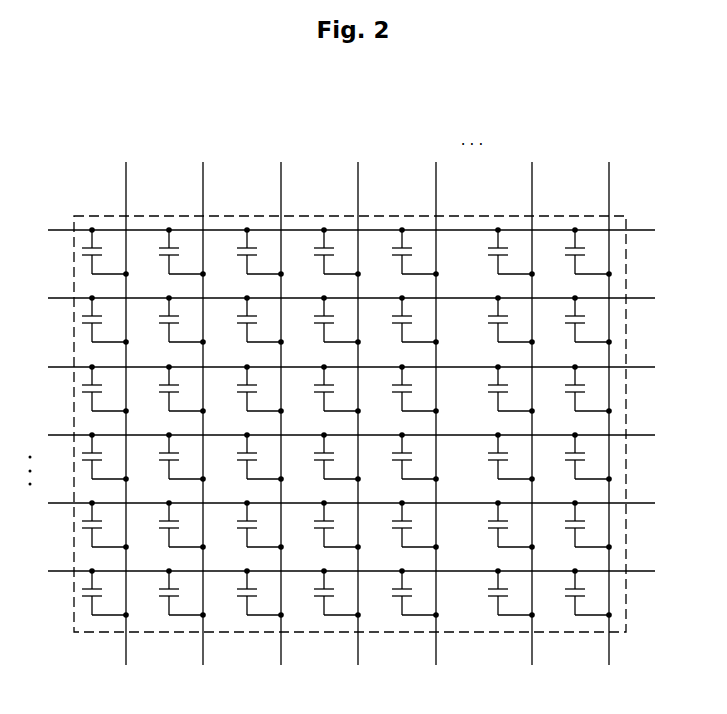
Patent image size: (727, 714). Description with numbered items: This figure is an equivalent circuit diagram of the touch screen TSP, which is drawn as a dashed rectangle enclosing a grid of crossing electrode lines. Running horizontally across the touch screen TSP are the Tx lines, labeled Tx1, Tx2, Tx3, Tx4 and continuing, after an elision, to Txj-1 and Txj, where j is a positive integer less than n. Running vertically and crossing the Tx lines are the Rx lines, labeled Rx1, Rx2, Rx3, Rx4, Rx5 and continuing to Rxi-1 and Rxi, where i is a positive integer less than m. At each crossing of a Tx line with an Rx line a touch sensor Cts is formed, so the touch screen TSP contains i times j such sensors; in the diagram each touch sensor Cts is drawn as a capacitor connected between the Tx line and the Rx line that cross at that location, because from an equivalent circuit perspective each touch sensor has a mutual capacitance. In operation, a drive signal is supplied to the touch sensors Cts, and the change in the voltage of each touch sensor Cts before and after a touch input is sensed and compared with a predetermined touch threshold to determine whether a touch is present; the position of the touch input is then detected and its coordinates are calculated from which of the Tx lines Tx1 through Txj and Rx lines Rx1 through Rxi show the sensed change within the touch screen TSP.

The Rx line Rx1 is at (126, 401).
The Rx line Rx2 is at (203, 401).
The Rx line Rx3 is at (281, 401).
The Rx line Rx4 is at (358, 401).
The Rx line Rx5 is at (436, 401).
The Rx line Rxi-1 is at (532, 401).
The Rx line Rxi is at (608, 401).
The Tx line Tx1 is at (335, 231).
The Tx line Tx2 is at (335, 299).
The Tx line Tx3 is at (335, 368).
The Tx line Tx4 is at (335, 436).
The Tx line Txj-1 is at (331, 504).
The Tx line Txj is at (338, 572).
The touch sensor Cts is at (168, 252).
The touch screen TSP is at (626, 461).